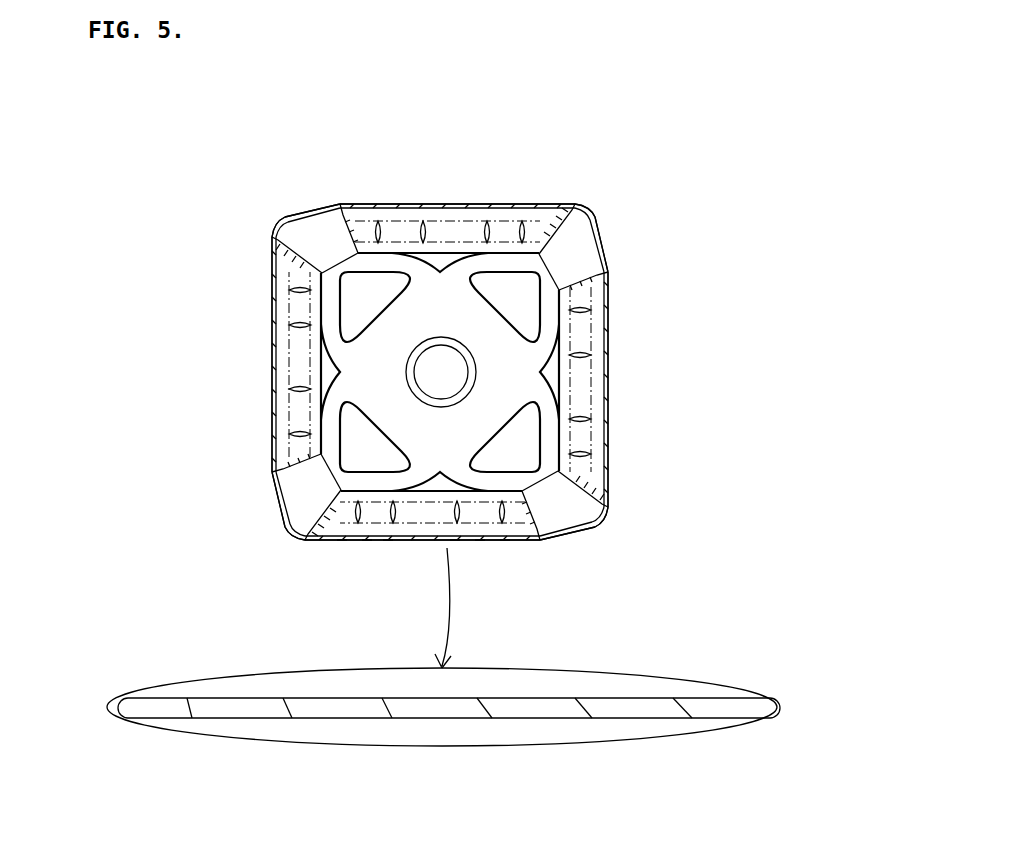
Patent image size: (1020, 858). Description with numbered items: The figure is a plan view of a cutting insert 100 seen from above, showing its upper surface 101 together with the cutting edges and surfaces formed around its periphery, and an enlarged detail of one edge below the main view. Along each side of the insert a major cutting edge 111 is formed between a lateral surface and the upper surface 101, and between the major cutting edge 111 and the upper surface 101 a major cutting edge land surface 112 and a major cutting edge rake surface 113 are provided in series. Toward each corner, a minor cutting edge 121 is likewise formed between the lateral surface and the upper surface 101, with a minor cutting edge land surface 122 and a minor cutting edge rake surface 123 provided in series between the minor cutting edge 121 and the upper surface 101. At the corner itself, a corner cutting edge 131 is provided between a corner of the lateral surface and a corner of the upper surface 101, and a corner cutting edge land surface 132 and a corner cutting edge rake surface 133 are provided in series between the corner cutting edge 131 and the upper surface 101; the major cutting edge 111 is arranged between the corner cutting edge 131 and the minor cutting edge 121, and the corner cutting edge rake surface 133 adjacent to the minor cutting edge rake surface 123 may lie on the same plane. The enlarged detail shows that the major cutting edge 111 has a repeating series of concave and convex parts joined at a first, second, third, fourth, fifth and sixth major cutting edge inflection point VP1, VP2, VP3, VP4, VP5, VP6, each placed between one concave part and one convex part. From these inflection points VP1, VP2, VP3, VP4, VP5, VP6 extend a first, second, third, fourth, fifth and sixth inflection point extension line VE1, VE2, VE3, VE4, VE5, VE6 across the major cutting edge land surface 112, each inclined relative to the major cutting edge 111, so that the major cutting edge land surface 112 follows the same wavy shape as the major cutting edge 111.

The cutting insert 100 is at (560, 99).
The upper surface 101 is at (500, 353).
The major cutting edge 111 is at (418, 204).
The major cutting edge land surface 112 is at (456, 205).
The major cutting edge rake surface 113 is at (466, 222).
The minor cutting edge 121 is at (308, 204).
The minor cutting edge land surface 122 is at (327, 210).
The minor cutting edge rake surface 123 is at (343, 214).
The corner cutting edge 131 is at (284, 222).
The corner cutting edge land surface 132 is at (278, 226).
The corner cutting edge rake surface 133 is at (272, 238).
The first inflection point extension line VE1 is at (338, 538).
The second inflection point extension line VE2 is at (368, 539).
The third inflection point extension line VE3 is at (388, 539).
The fourth inflection point extension line VE4 is at (455, 538).
The fifth inflection point extension line VE5 is at (480, 537).
The sixth inflection point extension line VE6 is at (505, 532).
The first major cutting edge inflection point VP1 is at (192, 730).
The second major cutting edge inflection point VP2 is at (292, 730).
The third major cutting edge inflection point VP3 is at (392, 730).
The fourth major cutting edge inflection point VP4 is at (493, 730).
The fifth major cutting edge inflection point VP5 is at (593, 730).
The sixth major cutting edge inflection point VP6 is at (693, 730).